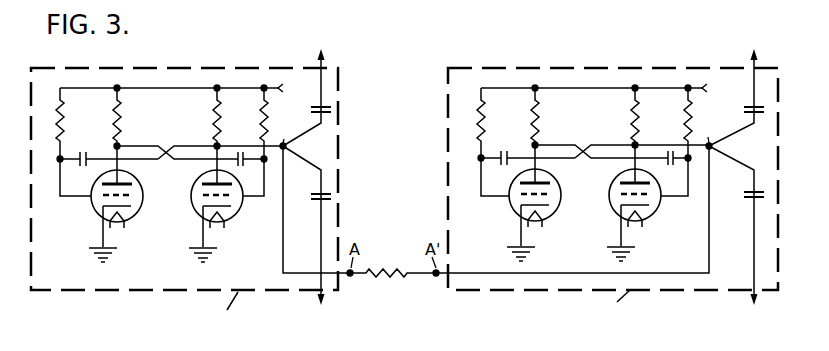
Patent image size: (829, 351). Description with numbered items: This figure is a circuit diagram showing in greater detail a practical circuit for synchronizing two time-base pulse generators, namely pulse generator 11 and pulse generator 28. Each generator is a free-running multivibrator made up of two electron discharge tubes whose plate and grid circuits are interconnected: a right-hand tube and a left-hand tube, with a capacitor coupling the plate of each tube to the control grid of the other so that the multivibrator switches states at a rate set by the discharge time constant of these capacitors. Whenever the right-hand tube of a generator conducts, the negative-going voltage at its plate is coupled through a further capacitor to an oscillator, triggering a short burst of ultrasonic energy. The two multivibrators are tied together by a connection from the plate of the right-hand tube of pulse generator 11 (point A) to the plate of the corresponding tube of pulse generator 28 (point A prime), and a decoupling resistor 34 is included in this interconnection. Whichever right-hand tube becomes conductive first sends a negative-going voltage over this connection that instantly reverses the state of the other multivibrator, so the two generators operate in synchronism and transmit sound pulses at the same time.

The pulse generator 11 is at (194, 68).
The pulse generator 28 is at (600, 68).
The decoupling resistor 34 is at (393, 258).